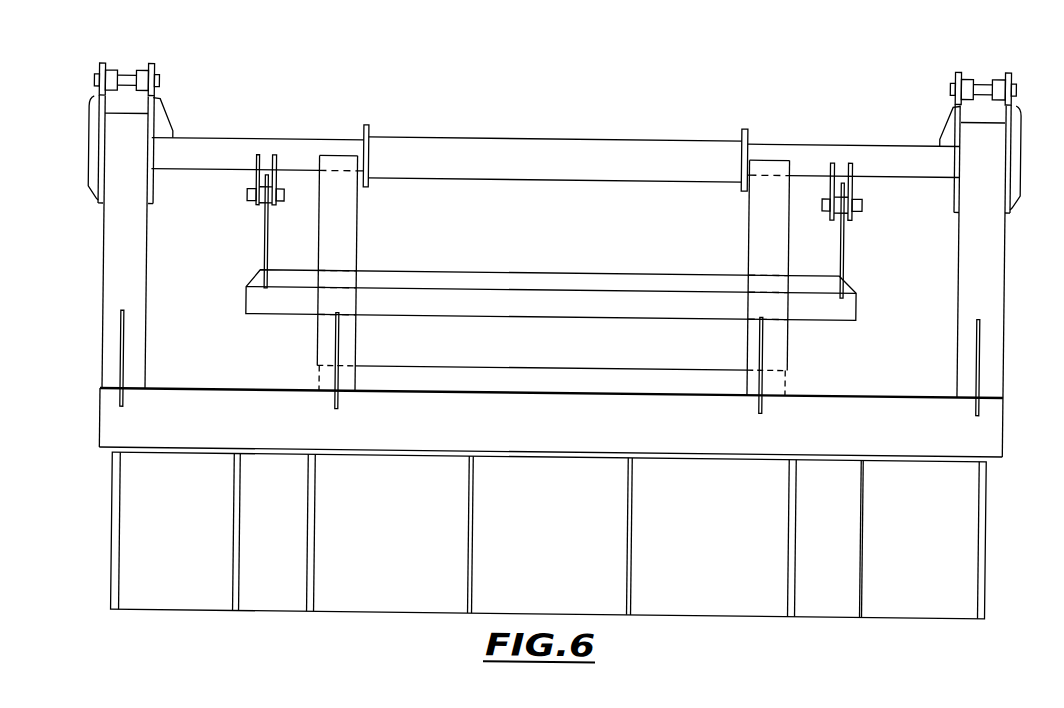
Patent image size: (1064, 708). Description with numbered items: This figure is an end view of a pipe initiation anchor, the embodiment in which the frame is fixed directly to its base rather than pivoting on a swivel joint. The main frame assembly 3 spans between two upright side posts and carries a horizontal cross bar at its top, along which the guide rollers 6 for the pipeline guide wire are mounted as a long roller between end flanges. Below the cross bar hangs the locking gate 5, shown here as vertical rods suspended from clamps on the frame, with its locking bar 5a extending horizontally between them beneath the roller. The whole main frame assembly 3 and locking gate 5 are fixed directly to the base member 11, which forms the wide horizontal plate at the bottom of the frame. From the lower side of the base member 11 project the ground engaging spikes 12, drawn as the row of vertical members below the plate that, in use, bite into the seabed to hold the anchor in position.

The main frame assembly 3 is at (213, 148).
The locking gate 5 is at (262, 231).
The locking bar 5a is at (460, 273).
The guide rollers 6 is at (486, 146).
The base member 11 is at (118, 426).
The ground engaging spikes 12 is at (112, 552).